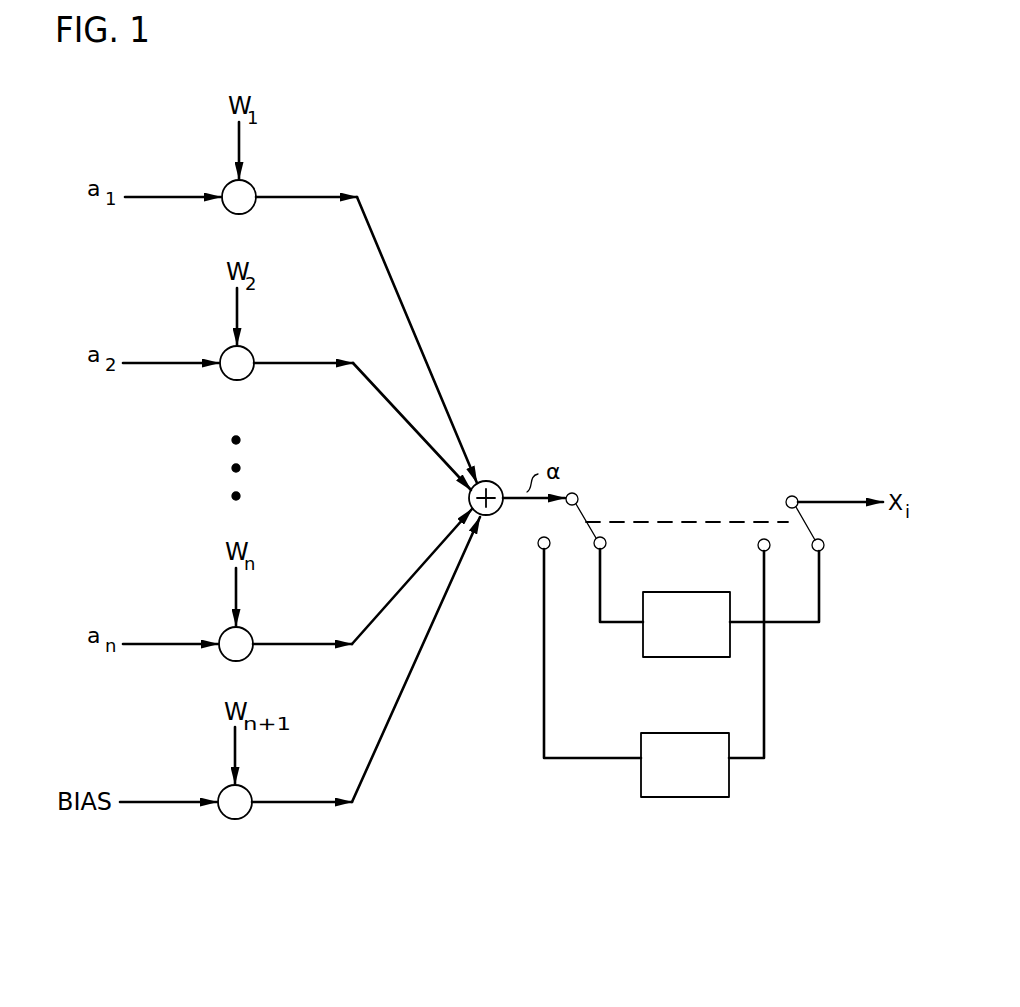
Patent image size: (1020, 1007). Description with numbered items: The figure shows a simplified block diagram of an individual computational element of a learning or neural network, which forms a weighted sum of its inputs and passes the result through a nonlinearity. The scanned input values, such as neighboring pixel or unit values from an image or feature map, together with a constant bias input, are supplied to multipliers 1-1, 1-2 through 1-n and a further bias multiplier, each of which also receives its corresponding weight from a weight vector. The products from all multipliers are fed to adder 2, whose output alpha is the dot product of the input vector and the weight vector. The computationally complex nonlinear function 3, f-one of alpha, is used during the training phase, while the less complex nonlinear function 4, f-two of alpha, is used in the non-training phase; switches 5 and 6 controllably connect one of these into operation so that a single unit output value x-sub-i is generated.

The multiplier 1-1 is at (254, 186).
The multiplier 1-2 is at (252, 349).
The multiplier 1-n is at (253, 630).
The adder 2 is at (502, 483).
The nonlinear function f1(α) 3 is at (640, 648).
The nonlinear function f2(α) 4 is at (677, 734).
The switch 5 is at (580, 509).
The switch 6 is at (789, 520).